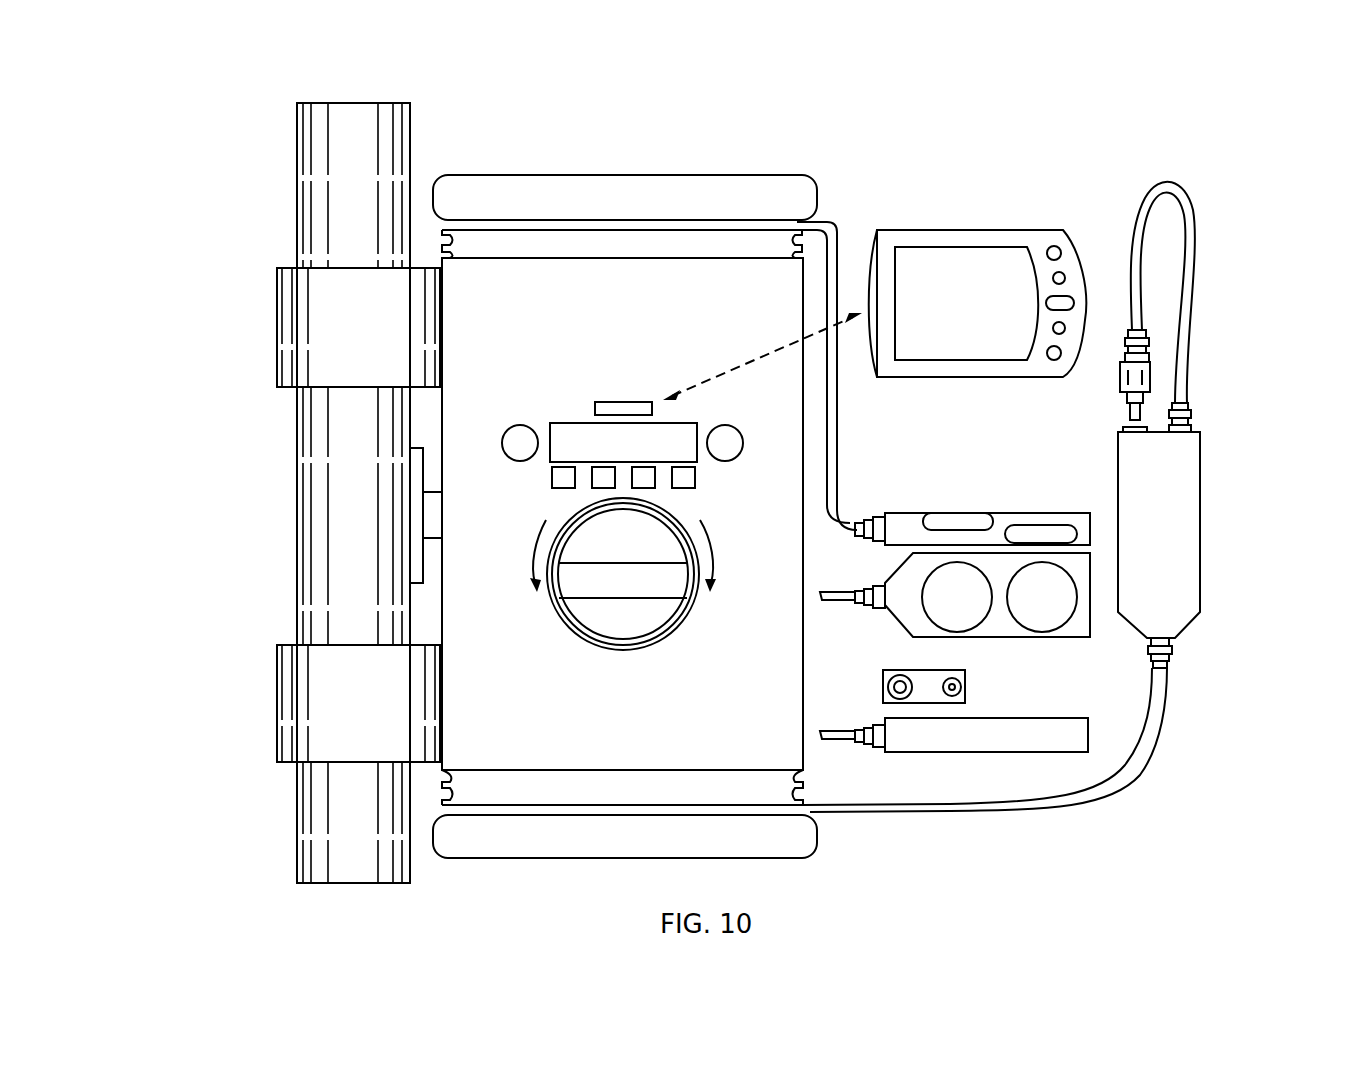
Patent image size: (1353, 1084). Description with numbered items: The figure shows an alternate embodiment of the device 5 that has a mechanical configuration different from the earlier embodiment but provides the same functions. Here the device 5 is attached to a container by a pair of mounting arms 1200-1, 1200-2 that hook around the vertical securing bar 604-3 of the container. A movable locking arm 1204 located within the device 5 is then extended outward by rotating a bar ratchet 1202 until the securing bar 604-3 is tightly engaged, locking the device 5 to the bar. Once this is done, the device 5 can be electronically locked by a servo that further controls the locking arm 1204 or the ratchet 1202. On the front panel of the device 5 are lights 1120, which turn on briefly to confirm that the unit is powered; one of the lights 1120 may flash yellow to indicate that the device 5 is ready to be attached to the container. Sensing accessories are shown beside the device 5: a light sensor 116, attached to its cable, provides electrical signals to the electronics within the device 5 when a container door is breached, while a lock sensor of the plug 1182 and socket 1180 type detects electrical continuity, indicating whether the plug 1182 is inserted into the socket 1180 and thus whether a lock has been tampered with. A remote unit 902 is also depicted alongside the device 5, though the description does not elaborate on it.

The device 5 is at (843, 150).
The securing bar 604-3 is at (400, 150).
The remote control unit 902 is at (982, 230).
The light sensor 116 is at (963, 513).
The lights 1120 is at (556, 488).
The socket 1180 is at (1200, 478).
The plug 1182 is at (1118, 393).
The mounting arm 1200-1 is at (278, 347).
The mounting arm 1200-2 is at (285, 726).
The bar ratchet 1202 is at (640, 588).
The locking arm 1204 is at (413, 522).